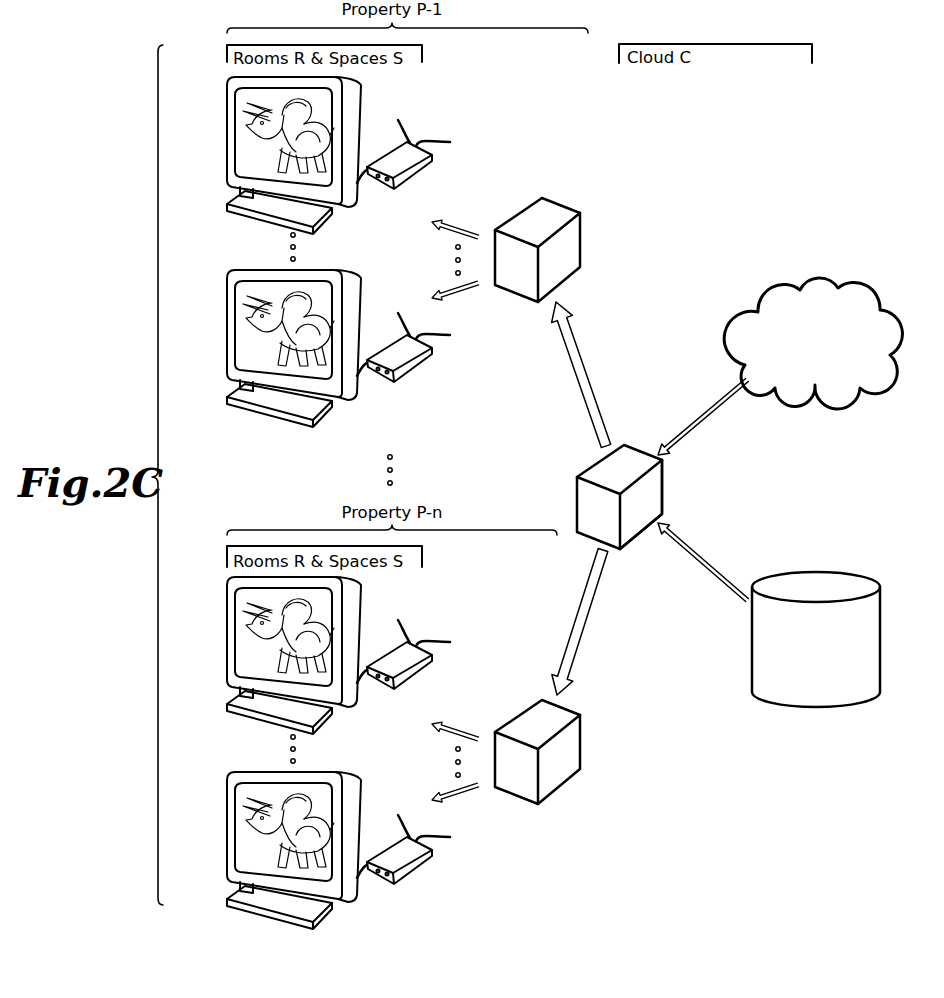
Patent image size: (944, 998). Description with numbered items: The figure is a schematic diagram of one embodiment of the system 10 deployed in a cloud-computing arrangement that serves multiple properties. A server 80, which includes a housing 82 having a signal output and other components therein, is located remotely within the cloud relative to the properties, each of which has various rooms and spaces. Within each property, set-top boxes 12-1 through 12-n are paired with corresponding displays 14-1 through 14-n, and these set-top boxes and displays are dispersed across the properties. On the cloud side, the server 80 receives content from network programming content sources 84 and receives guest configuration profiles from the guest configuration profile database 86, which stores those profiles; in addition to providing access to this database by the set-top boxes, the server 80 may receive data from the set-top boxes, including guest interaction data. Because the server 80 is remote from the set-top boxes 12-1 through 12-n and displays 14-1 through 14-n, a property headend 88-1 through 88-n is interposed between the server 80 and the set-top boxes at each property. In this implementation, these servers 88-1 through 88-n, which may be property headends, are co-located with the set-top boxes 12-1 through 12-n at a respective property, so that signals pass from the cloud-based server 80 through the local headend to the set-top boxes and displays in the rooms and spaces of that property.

The system 10 is at (148, 89).
The display 14-1 is at (363, 88).
The display 14-n is at (363, 281).
The set-top box 12-1 is at (413, 173).
The set-top box 12-n is at (413, 366).
The property headend 88-1 is at (560, 199).
The property headend 88-n is at (564, 790).
The server 80 is at (640, 447).
The housing 82 is at (635, 524).
The network programming content sources 84 is at (817, 392).
The guest configuration profile database 86 is at (810, 708).